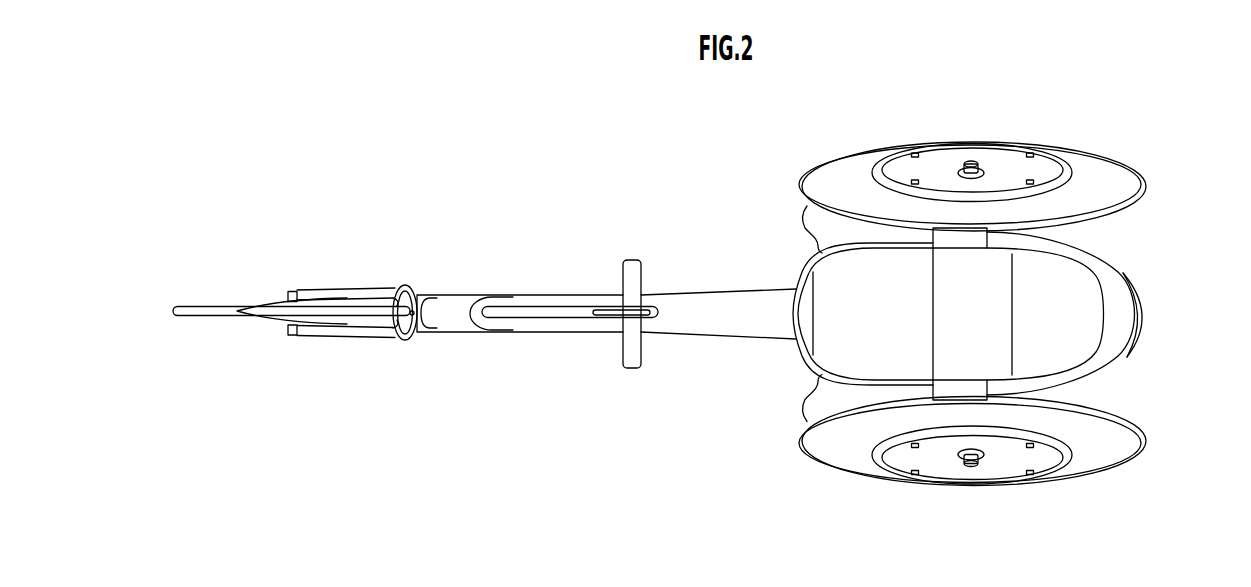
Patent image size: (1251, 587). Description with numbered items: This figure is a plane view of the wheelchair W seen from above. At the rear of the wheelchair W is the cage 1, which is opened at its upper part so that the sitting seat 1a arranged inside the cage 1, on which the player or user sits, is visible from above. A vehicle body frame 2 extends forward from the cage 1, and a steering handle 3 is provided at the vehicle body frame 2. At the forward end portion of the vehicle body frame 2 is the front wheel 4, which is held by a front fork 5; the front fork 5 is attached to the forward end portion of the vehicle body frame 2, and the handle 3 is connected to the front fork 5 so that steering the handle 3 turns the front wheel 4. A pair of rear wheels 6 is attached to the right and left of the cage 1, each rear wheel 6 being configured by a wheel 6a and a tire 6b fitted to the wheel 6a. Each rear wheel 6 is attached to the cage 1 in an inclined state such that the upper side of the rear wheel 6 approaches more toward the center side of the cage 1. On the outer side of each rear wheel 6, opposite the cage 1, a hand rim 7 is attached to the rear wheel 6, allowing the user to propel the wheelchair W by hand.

The wheelchair W is at (1186, 160).
The cage 1 is at (1112, 350).
The sitting seat 1a is at (1083, 282).
The vehicle body frame 2 is at (737, 300).
The steering handle 3 is at (635, 262).
The front wheel 4 is at (210, 302).
The front fork 5 is at (337, 290).
The rear wheel 6 is at (987, 314).
The wheel 6a is at (1118, 178).
The tire 6b is at (1146, 189).
The hand rim 7 is at (876, 165).